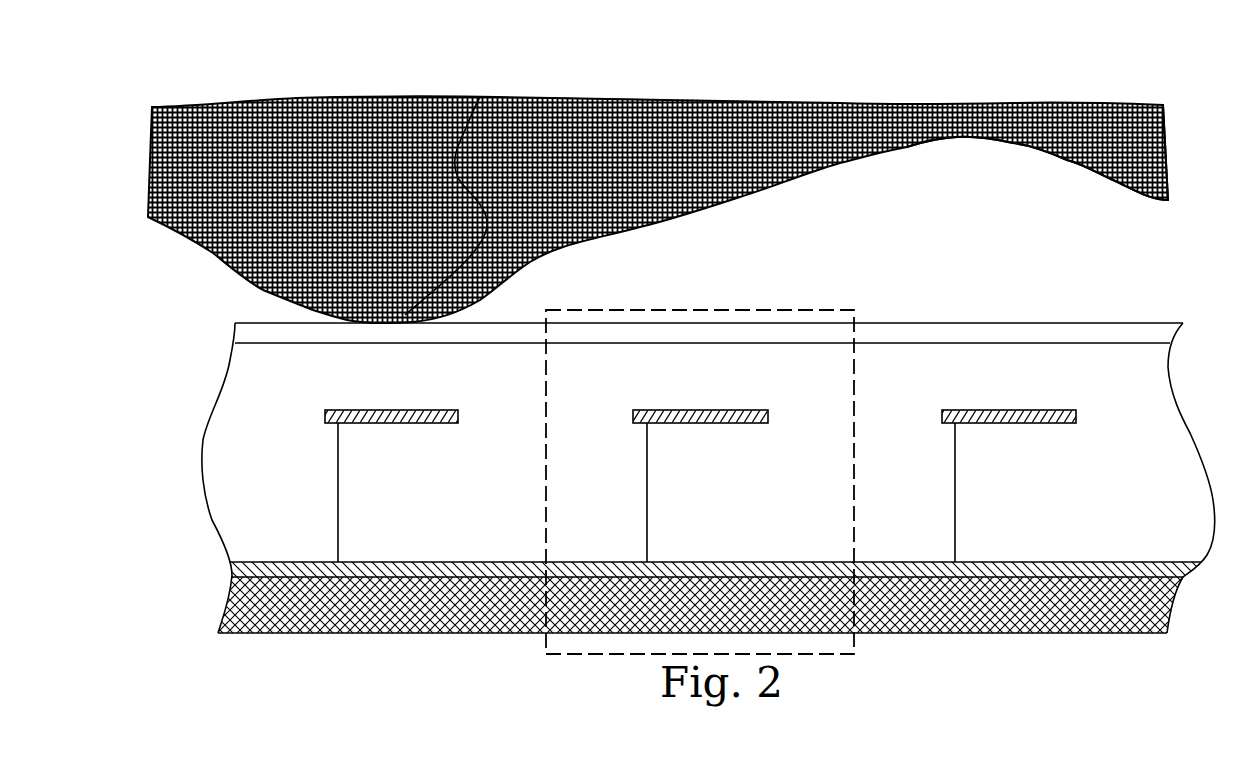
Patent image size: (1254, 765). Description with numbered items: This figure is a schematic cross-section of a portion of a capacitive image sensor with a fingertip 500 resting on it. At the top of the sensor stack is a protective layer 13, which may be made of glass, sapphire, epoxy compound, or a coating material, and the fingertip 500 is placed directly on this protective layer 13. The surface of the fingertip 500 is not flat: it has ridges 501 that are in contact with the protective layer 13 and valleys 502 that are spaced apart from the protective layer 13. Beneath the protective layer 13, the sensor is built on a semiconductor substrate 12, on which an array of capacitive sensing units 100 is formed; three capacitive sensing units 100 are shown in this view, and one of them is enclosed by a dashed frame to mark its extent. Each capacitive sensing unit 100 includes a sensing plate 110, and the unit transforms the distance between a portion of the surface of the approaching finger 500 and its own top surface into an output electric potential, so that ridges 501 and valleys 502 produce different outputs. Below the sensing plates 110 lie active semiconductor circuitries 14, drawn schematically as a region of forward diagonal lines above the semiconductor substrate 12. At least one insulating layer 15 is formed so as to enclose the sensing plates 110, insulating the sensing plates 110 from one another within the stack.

The fingertip 500 is at (368, 115).
The ridges 501 is at (480, 97).
The valleys 502 is at (967, 123).
The protective layer 13 is at (243, 330).
The sensing plate 110 is at (325, 423).
The insulating layer 15 is at (243, 522).
The active semiconductor circuitries 14 is at (247, 565).
The semiconductor substrate 12 is at (247, 602).
The capacitive sensing unit 100 is at (546, 655).